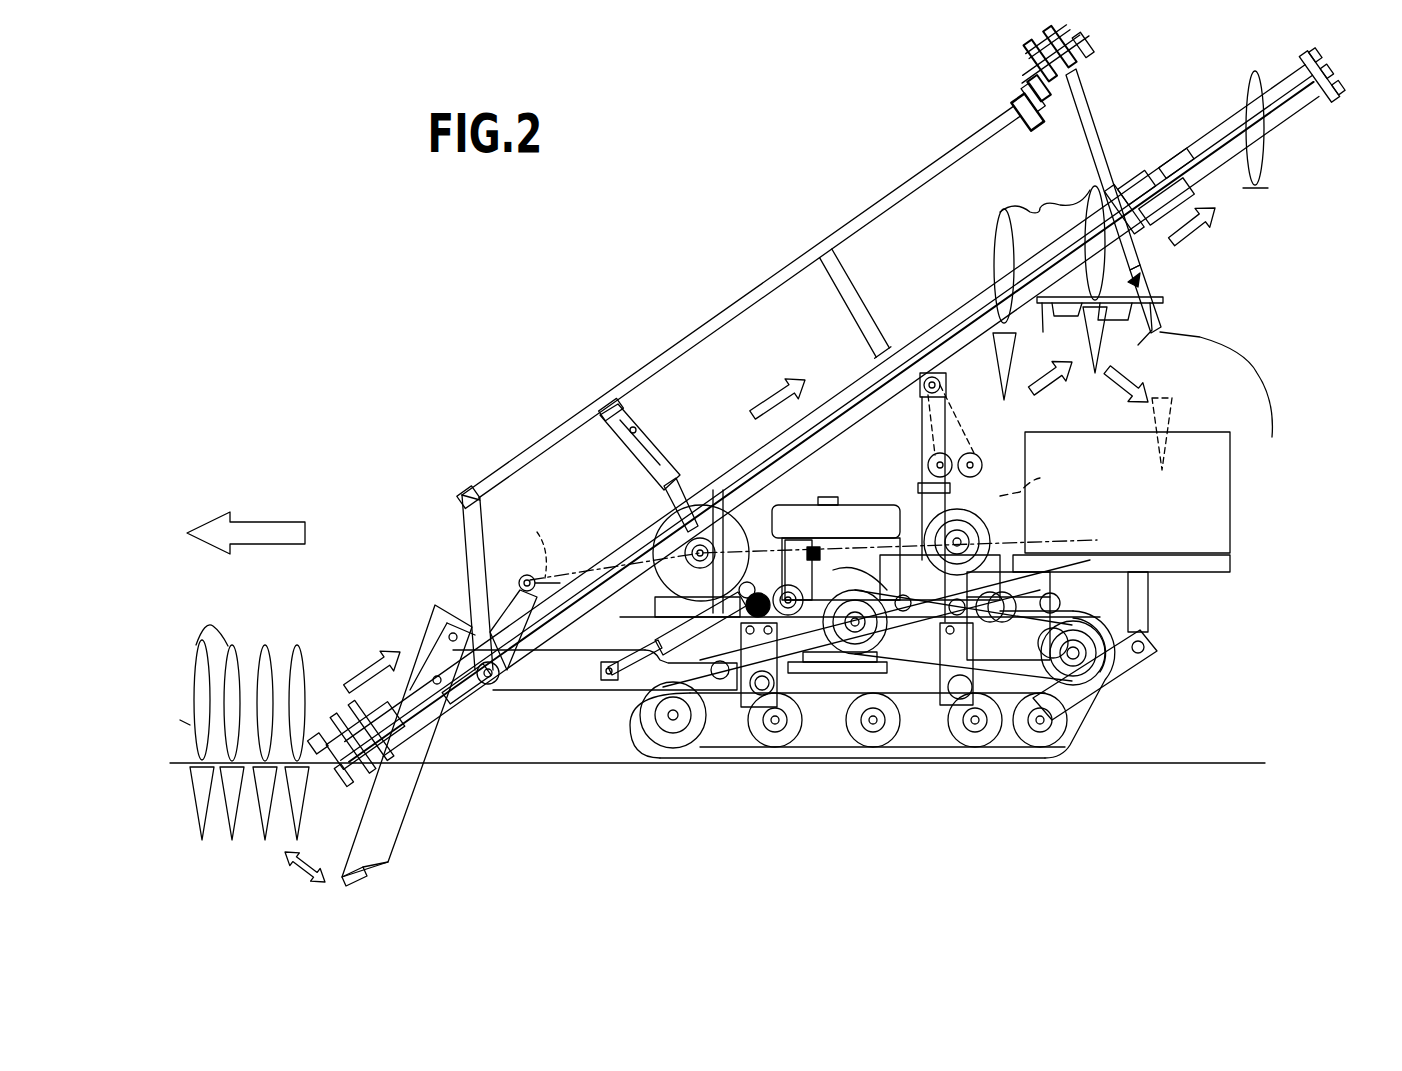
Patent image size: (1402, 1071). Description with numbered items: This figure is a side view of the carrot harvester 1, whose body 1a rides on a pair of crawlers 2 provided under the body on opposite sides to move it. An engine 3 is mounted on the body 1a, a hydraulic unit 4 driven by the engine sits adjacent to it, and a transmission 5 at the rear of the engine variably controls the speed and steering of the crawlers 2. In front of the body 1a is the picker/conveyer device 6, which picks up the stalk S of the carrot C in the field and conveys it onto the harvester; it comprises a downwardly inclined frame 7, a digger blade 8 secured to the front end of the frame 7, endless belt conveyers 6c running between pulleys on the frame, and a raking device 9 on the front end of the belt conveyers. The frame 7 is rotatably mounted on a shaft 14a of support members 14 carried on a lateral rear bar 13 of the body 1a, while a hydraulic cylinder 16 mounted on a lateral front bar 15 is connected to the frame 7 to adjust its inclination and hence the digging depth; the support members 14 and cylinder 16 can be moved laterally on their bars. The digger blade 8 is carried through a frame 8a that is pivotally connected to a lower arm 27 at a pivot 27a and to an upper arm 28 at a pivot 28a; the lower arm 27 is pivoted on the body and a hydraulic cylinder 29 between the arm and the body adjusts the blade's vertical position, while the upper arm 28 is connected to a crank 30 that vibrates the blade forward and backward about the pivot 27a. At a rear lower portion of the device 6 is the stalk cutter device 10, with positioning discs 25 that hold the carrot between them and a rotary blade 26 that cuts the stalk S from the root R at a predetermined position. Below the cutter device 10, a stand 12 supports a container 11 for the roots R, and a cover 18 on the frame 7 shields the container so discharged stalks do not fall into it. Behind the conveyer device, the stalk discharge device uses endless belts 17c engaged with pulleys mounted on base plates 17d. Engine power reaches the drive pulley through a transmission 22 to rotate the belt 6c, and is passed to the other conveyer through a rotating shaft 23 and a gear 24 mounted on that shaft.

The harvester 1 is at (872, 186).
The body 1a is at (905, 675).
The crawlers 2 is at (1080, 705).
The engine 3 is at (805, 507).
The hydraulic unit 4 is at (1015, 585).
The transmission 5 is at (1070, 600).
The picker/conveyer device 6 is at (596, 530).
The endless belt conveyer 6c is at (560, 618).
The frame 7 is at (880, 335).
The digger blade 8 is at (352, 885).
The frame 8a is at (400, 790).
The raking device 9 is at (350, 704).
The stalk cutter device 10 is at (1140, 272).
The container 11 is at (1232, 492).
The stand 12 is at (1206, 575).
The lateral rear bar 13 is at (925, 505).
The support members 14 is at (920, 445).
The shaft 14a is at (948, 395).
The lateral front bar 15 is at (757, 625).
The hydraulic cylinder 16 is at (684, 496).
The endless belts 17c is at (1188, 140).
The base plates 17d is at (1312, 100).
The cover 18 is at (1258, 374).
The transmission 22 is at (1034, 474).
The rotating shaft 23 is at (1124, 152).
The gear 24 is at (1030, 66).
The positioning discs 25 is at (1043, 318).
The rotary blade 26 is at (1165, 299).
The lower arm 27 is at (522, 683).
The pivot 27a is at (486, 685).
The upper arm 28 is at (529, 538).
The pivot 28a is at (520, 581).
The hydraulic cylinder 29 is at (670, 640).
The crank 30 is at (688, 538).
The stalk S is at (213, 626).
The root R is at (195, 812).
The carrot C is at (187, 722).